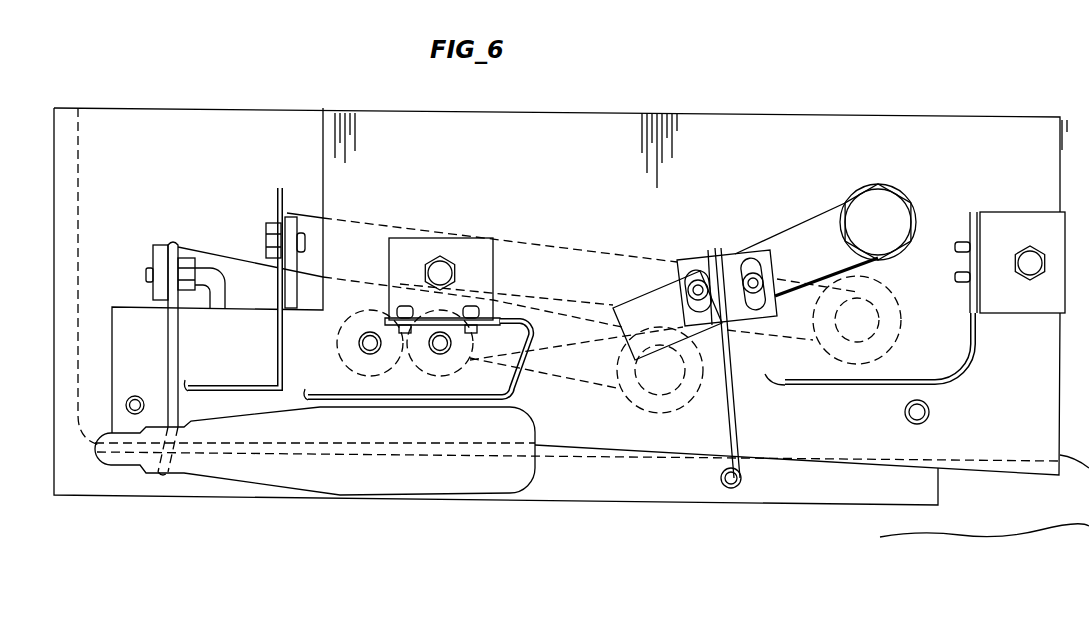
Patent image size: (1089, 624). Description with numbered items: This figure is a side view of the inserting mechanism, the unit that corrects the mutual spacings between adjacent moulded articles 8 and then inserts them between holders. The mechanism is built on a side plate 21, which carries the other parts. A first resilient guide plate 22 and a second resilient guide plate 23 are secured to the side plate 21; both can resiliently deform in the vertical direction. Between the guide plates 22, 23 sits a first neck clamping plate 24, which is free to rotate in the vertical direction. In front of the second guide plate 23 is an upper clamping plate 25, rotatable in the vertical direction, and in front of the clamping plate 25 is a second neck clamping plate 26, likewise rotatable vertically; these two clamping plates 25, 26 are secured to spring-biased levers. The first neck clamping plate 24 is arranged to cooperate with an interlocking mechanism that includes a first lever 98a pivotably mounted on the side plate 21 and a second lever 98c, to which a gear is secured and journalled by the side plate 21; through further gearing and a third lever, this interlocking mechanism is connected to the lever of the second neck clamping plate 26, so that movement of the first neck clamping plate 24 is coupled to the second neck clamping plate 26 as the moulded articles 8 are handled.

The moulded articles 8 is at (470, 437).
The side plate 21 is at (962, 125).
The first resilient guide plate 22 is at (970, 367).
The second resilient guide plate 23 is at (517, 393).
The first neck clamping plate 24 is at (740, 433).
The upper clamping plate 25 is at (208, 385).
The second neck clamping plate 26 is at (168, 388).
The first lever 98a is at (787, 237).
The second lever 98c is at (597, 300).